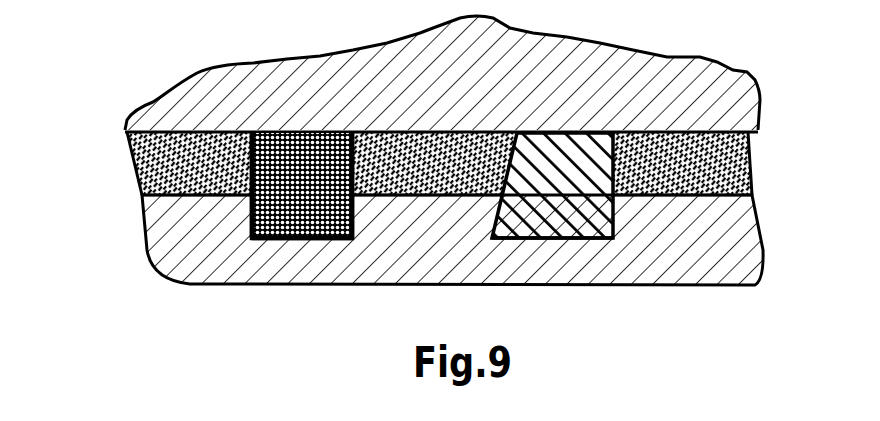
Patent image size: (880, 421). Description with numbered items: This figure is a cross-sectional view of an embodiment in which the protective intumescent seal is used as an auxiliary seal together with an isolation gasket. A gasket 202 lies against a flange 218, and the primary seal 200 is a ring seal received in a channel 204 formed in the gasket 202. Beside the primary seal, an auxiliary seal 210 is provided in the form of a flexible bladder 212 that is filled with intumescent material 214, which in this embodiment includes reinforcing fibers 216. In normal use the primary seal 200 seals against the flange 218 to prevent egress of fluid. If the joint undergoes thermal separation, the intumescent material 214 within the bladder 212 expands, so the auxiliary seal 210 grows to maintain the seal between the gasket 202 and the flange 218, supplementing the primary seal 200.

The flange 218 is at (637, 62).
The gasket 202 is at (463, 284).
The primary seal 200 is at (553, 228).
The channel 204 is at (605, 238).
The reinforcing fibers 216 is at (300, 222).
The flexible bladder 212 is at (250, 223).
The auxiliary seal 210 is at (312, 240).
The intumescent material 214 is at (327, 242).